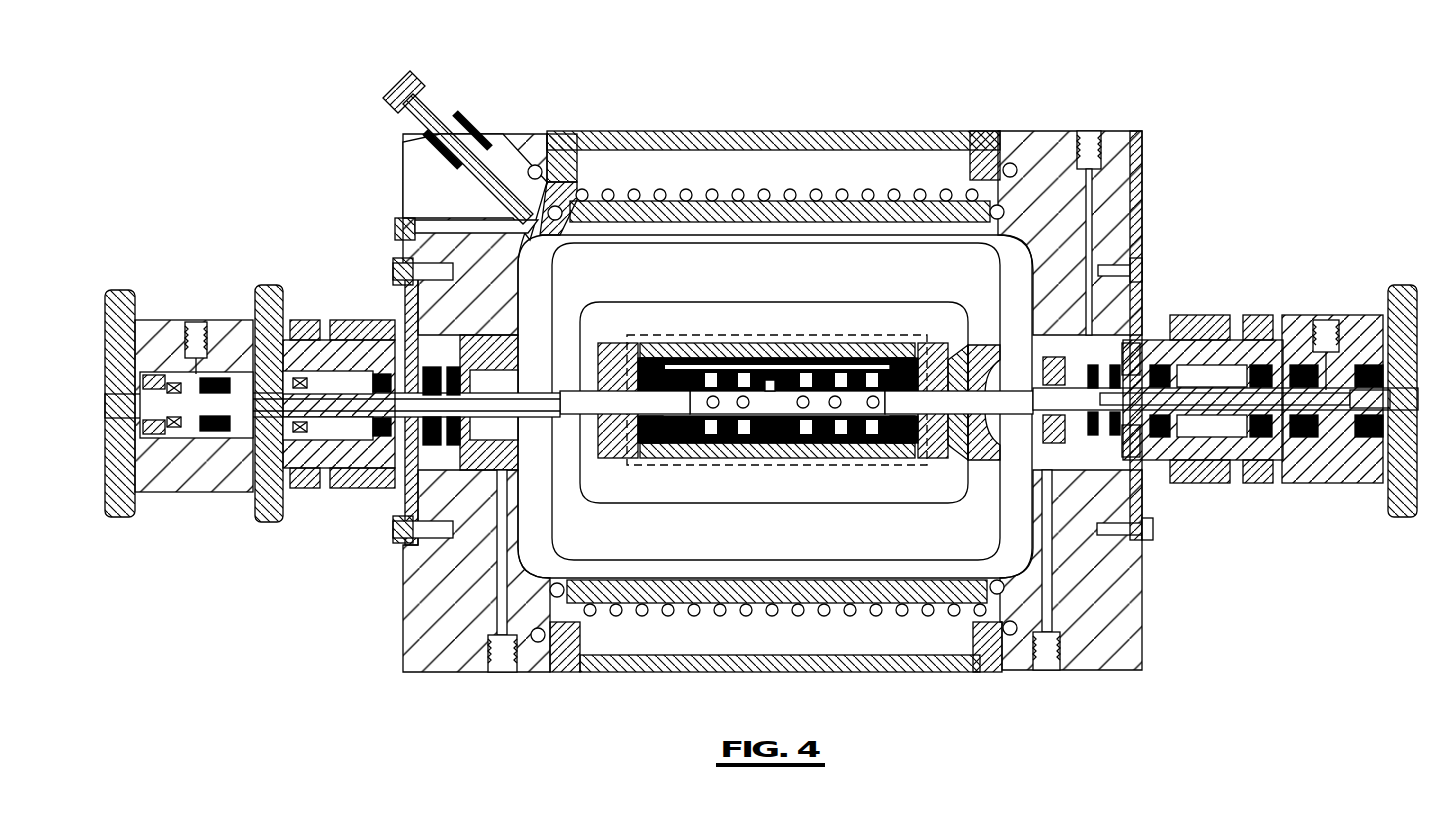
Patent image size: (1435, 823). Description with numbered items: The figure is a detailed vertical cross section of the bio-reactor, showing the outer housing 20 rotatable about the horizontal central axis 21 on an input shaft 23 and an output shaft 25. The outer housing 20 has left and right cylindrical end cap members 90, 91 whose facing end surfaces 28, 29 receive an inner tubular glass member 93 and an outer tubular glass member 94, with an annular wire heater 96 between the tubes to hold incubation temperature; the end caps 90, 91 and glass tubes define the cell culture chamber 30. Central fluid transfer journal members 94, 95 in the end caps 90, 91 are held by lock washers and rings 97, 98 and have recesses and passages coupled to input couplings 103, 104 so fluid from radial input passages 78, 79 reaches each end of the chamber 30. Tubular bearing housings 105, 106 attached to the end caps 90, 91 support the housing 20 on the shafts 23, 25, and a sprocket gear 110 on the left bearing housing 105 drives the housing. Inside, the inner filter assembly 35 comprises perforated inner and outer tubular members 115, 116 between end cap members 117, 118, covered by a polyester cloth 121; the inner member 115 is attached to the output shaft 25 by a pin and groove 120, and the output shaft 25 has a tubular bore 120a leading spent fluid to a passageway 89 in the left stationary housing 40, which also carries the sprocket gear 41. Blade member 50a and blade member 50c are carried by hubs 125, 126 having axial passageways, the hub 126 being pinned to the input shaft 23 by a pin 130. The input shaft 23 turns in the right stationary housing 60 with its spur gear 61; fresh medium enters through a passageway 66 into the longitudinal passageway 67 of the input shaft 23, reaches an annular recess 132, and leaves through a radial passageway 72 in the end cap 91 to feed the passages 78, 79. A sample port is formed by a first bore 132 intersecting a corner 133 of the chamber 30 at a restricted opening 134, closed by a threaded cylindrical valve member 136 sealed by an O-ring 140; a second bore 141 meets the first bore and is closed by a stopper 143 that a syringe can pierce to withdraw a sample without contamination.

The outer tubular housing 20 is at (486, 122).
The central axis 21 is at (68, 405).
The input shaft 23 is at (1216, 412).
The output shaft 25 is at (317, 420).
The end surface 28 is at (775, 406).
The end surface 29 is at (1027, 266).
The cell culture chamber 30 is at (794, 497).
The inner filter assembly 35 is at (748, 335).
The stationary housing 40 is at (160, 320).
The sprocket gear 41 is at (117, 290).
The blade member 50a is at (704, 258).
The lower chamber 50c is at (727, 535).
The stationary housing 60 is at (1353, 320).
The spur gear 61 is at (1415, 292).
The passageway 66 is at (1327, 357).
The longitudinal passageway 67 is at (1238, 405).
The radial passageway 72 is at (1098, 228).
The input passage 78 is at (500, 608).
The input passage 79 is at (1057, 597).
The passageway 89 is at (196, 340).
The left hand end cap member 90 is at (530, 133).
The right hand end cap member 91 is at (1040, 130).
The inner tubular glass member 93 is at (755, 193).
The outer tubular glass member 94 is at (682, 131).
The fluid transfer journal member 95 is at (1064, 357).
The annular wire heater 96 is at (687, 612).
The lock washer and ring 97 is at (408, 338).
The lock washer and ring 98 is at (1134, 325).
The input coupling 103 is at (508, 650).
The input coupling 104 is at (1058, 645).
The tubular bearing housing 105 is at (305, 342).
The tubular bearing housing 106 is at (1197, 343).
The sprocket gear 110 is at (268, 285).
The inner tubular member 115 is at (827, 373).
The outer tubular member 116 is at (840, 340).
The end cap member 117 is at (615, 345).
The end cap member 118 is at (948, 345).
The pin and interfitting groove 120 is at (640, 458).
The tubular bore 120a is at (414, 406).
The polyester cloth 121 is at (700, 335).
The hub 125 is at (774, 388).
The hub 126 is at (1005, 330).
The pin 130 is at (940, 455).
The first bore 132 is at (582, 152).
The corner 133 is at (566, 200).
The restricted opening 134 is at (628, 208).
The cylindrical valve member 136 is at (437, 96).
The O-ring 140 is at (556, 134).
The second bore 141 is at (445, 236).
The stopper 143 is at (398, 226).